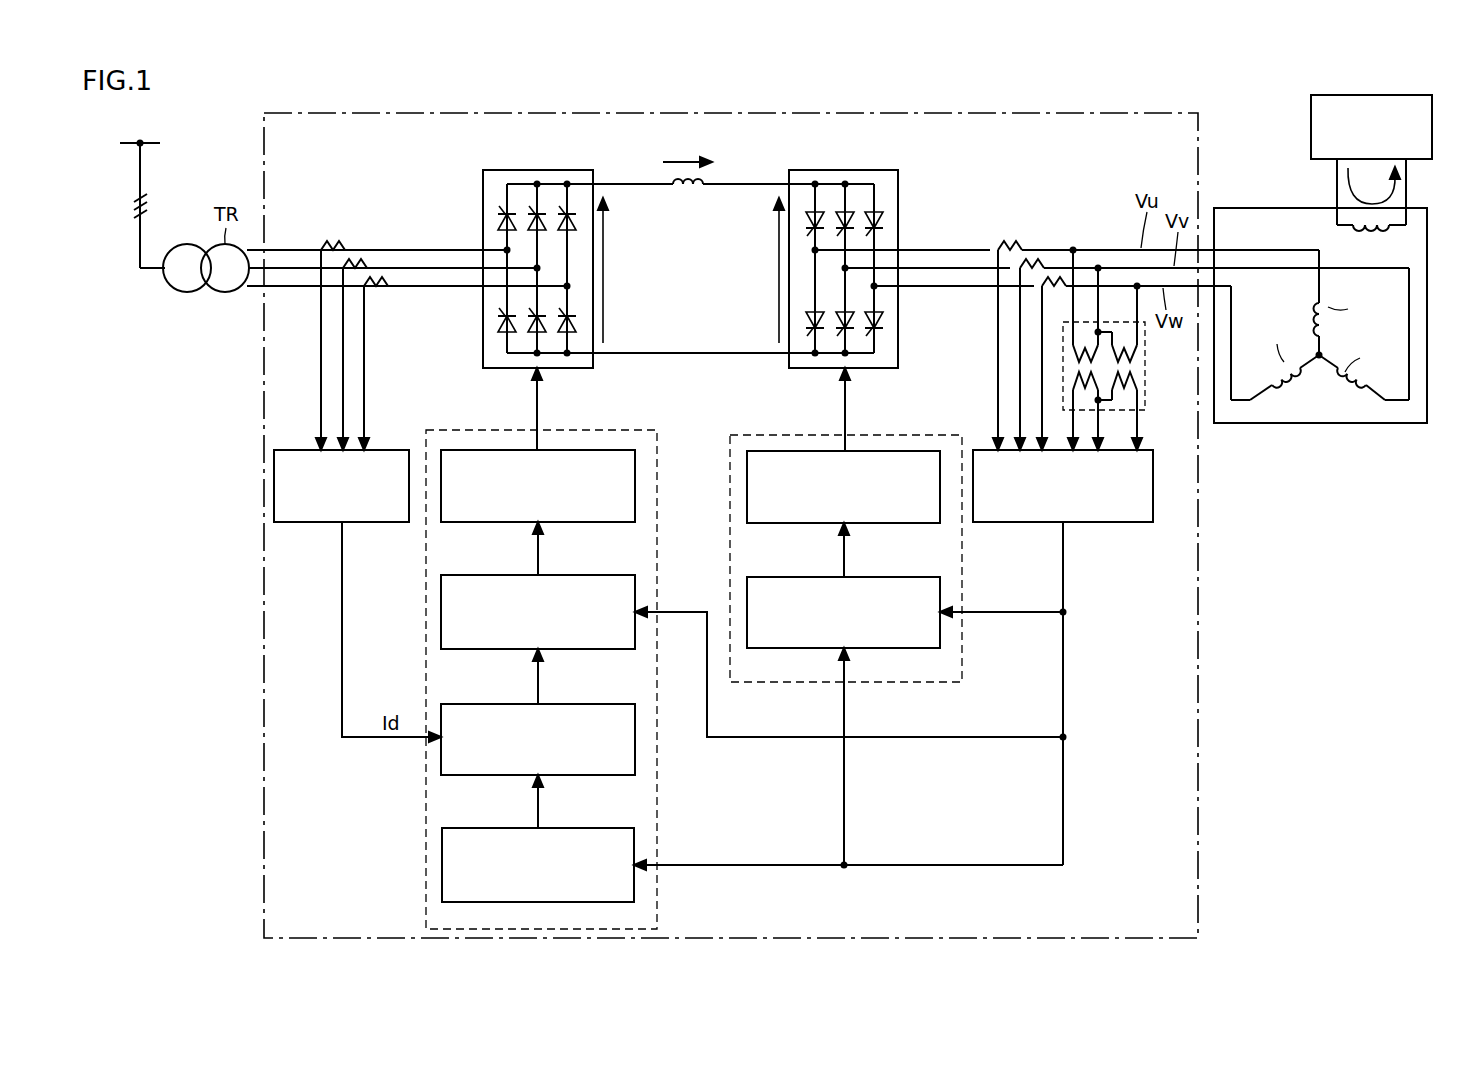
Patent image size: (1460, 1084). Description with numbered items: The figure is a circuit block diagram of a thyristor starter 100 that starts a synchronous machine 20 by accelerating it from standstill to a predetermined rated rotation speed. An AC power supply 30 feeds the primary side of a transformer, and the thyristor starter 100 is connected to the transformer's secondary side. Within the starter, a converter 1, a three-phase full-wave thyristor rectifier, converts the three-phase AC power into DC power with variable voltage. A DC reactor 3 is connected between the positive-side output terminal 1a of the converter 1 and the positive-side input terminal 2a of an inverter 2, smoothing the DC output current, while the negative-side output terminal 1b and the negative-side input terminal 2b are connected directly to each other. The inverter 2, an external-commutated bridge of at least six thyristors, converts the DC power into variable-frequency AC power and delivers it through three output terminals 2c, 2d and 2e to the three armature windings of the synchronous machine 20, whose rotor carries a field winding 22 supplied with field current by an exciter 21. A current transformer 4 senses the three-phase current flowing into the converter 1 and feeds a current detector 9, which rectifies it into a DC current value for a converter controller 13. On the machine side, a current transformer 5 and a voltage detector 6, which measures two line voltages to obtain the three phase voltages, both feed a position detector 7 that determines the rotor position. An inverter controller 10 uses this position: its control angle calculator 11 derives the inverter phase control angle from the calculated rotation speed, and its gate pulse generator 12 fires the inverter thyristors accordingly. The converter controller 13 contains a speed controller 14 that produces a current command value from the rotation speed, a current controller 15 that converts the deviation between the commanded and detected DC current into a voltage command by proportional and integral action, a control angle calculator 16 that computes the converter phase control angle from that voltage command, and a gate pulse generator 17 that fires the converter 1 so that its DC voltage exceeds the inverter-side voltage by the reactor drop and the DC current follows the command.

The converter 1 is at (537, 170).
The positive-side output terminal 1a is at (594, 184).
The negative-side output terminal 1b is at (594, 354).
The inverter 2 is at (845, 170).
The positive-side input terminal 2a is at (788, 184).
The negative-side input terminal 2b is at (788, 354).
The output terminal 2c is at (899, 250).
The output terminal 2d is at (899, 268).
The output terminal 2e is at (899, 287).
The DC reactor 3 is at (688, 190).
The current transformer 4 is at (340, 240).
The current transformer 5 is at (1018, 240).
The voltage detector 6 is at (1146, 400).
The position detector 7 is at (1122, 523).
The current detector 9 is at (375, 523).
The inverter controller 10 is at (871, 525).
The control angle calculator 11 is at (920, 648).
The gate pulse generator 12 is at (920, 523).
The converter controller 13 is at (567, 648).
The speed controller 14 is at (614, 902).
The current controller 15 is at (615, 775).
The control angle calculator 16 is at (615, 649).
The gate pulse generator 17 is at (615, 523).
The synchronous machine 20 is at (1266, 207).
The exciter 21 is at (1310, 128).
The field winding 22 is at (1412, 181).
The AC power supply 30 is at (150, 143).
The thyristor starter 100 is at (1198, 778).